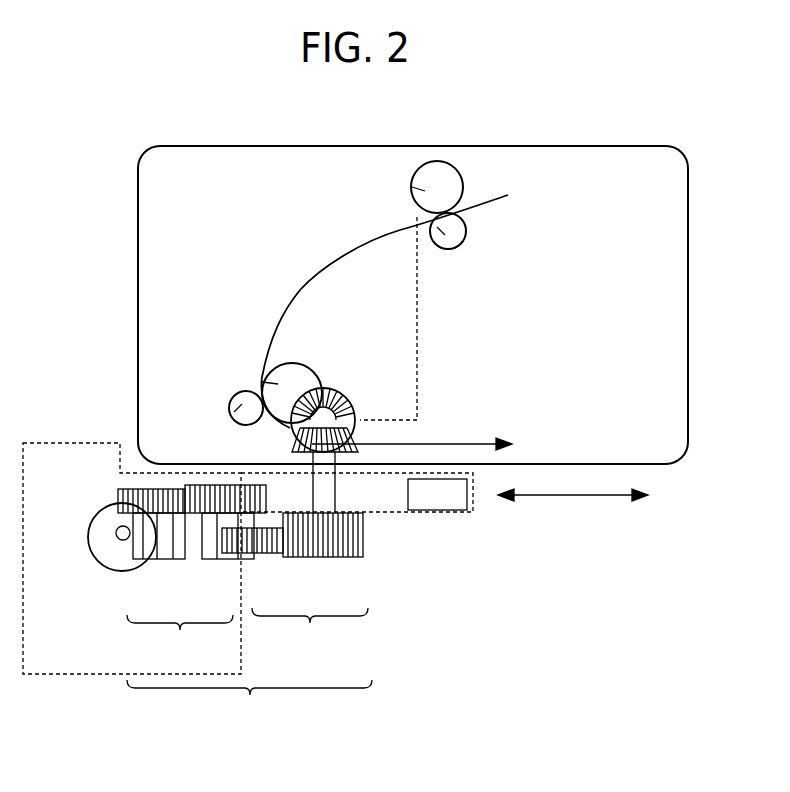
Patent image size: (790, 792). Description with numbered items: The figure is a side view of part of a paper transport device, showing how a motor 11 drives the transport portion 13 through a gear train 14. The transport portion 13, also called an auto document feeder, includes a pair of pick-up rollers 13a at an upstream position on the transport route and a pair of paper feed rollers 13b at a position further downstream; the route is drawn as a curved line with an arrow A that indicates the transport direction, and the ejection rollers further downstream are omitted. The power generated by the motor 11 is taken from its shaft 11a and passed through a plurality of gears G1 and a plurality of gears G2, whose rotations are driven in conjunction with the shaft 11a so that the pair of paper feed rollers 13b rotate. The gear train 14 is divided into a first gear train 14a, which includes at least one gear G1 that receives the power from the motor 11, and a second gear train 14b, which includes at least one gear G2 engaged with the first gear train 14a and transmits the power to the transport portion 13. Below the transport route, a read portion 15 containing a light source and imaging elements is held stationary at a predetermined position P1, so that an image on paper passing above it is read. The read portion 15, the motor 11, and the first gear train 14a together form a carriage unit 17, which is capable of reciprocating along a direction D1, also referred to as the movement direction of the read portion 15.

The motor 11 is at (98, 522).
The shaft 11a is at (121, 527).
The transport portion 13 is at (688, 275).
The pair of pick-up (PU) rollers 13a is at (425, 191).
The pair of paper feed (PF) rollers 13b is at (262, 382).
The gear train 14 is at (295, 531).
The first gear train 14a is at (192, 574).
The second gear train 14b is at (295, 495).
The read portion 15 is at (445, 524).
The predetermined position P1 is at (430, 500).
The carriage unit 17 is at (62, 676).
The gears G1 is at (163, 553).
The gears G2 is at (345, 390).
The arrow A is at (412, 431).
The direction D1 is at (573, 511).